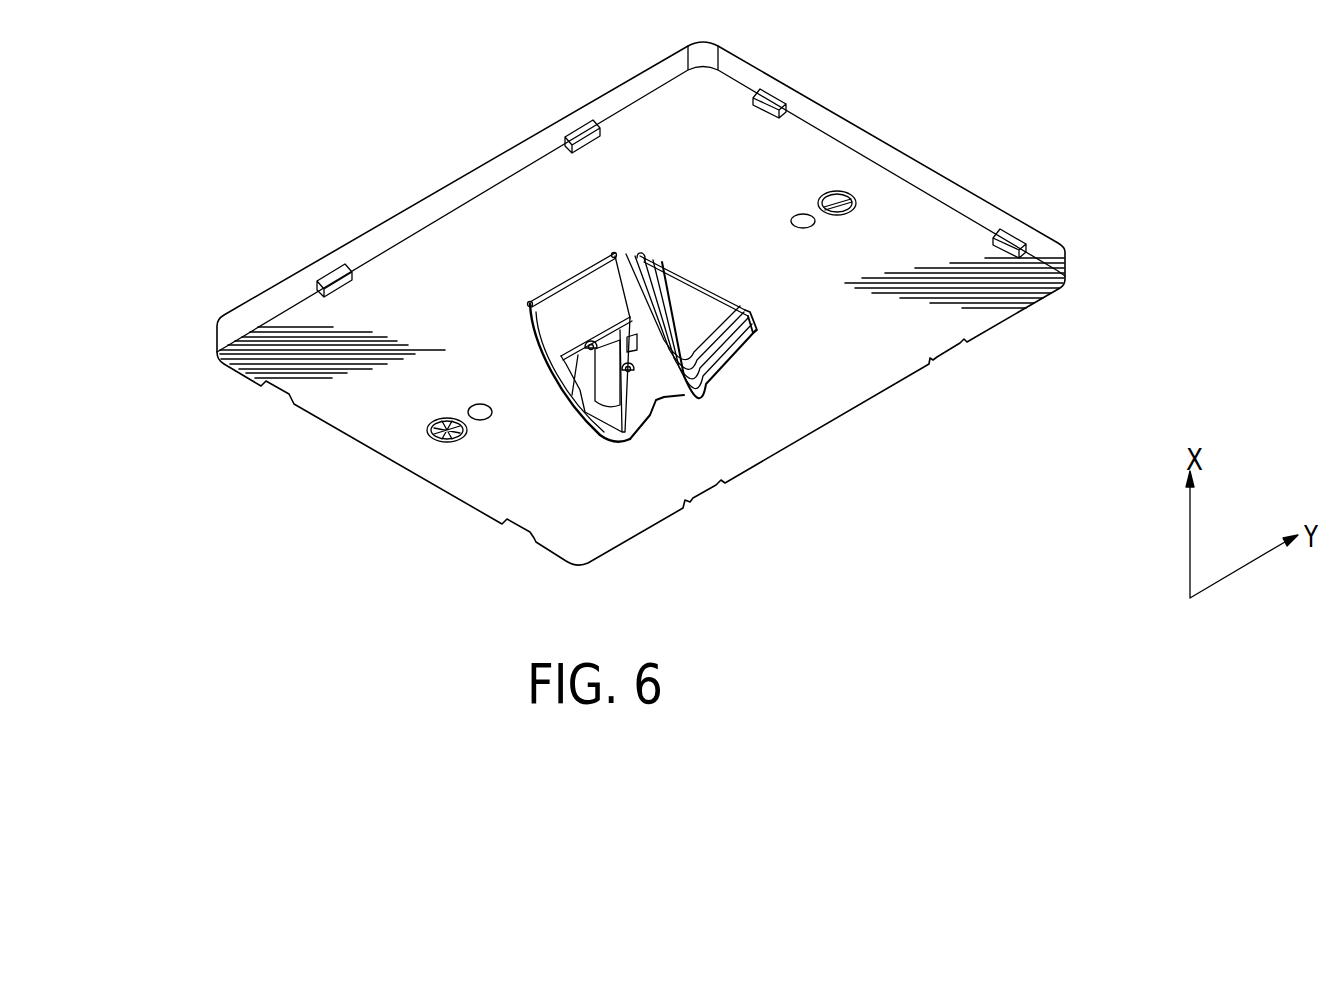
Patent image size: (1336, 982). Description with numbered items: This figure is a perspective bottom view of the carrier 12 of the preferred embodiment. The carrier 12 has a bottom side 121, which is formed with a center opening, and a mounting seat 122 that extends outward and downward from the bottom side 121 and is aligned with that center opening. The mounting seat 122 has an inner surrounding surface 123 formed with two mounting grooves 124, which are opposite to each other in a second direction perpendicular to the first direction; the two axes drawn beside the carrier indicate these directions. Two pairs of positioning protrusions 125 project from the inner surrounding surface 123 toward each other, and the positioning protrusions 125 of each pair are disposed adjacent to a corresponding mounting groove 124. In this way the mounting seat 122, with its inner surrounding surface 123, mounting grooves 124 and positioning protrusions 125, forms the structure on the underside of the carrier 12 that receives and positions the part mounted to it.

The carrier 12 is at (1010, 195).
The bottom side 121 is at (990, 302).
The mounting seat 122 is at (748, 390).
The inner surrounding surface 123 is at (575, 405).
The mounting groove 124 is at (607, 383).
The positioning protrusion 125 is at (637, 360).